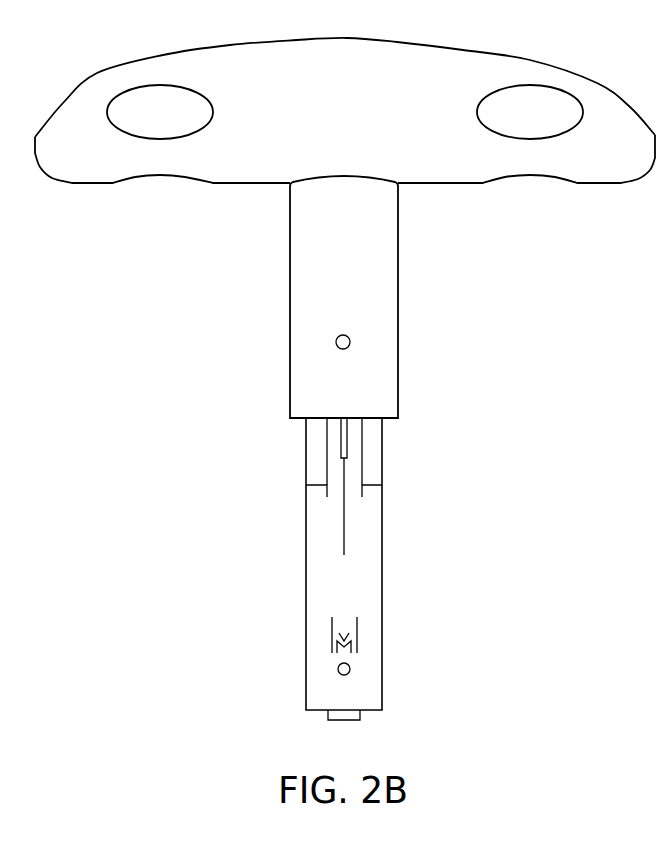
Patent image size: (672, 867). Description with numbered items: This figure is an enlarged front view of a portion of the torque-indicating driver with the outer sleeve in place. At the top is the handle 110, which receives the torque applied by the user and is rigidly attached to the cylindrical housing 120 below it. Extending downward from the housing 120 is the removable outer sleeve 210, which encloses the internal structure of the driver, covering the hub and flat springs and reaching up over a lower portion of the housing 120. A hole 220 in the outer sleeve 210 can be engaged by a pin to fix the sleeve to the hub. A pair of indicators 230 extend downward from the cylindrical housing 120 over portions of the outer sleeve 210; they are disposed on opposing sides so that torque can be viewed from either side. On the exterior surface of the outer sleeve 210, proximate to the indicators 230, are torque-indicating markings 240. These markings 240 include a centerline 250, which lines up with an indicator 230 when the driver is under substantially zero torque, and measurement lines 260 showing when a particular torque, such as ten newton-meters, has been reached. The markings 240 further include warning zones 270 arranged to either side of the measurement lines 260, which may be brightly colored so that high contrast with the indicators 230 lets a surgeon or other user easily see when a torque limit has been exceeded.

The handle 110 is at (567, 67).
The cylindrical housing 120 is at (398, 305).
The outer sleeve 210 is at (382, 618).
The holes 220 is at (350, 667).
The indicators 230 is at (347, 455).
The torque-indicating markings 240 is at (246, 458).
The centerline 250 is at (344, 540).
The measurement lines 260 is at (312, 491).
The warning zones 270 is at (306, 430).